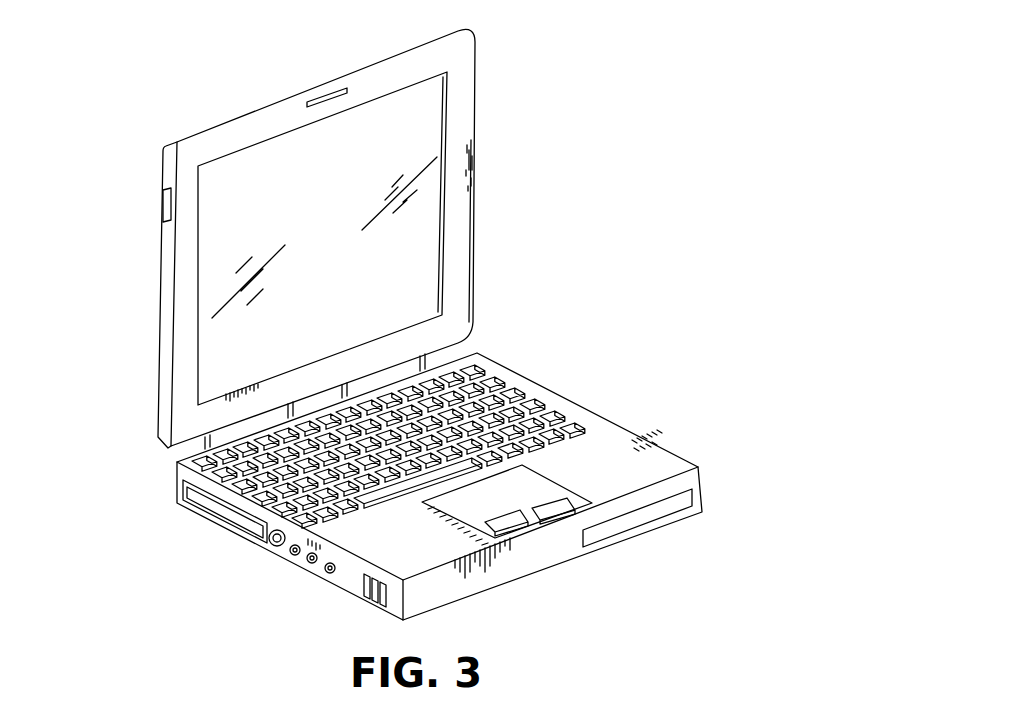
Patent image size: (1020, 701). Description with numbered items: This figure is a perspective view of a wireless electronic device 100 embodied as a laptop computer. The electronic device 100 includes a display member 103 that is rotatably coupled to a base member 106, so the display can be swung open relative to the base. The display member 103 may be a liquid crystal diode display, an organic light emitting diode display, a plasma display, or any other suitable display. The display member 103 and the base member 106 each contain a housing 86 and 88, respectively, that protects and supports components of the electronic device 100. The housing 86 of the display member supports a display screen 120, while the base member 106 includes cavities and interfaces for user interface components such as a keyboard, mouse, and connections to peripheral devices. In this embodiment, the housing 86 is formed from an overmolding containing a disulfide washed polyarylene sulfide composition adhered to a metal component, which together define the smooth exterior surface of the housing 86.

The wireless electronic device 100 is at (524, 44).
The housing 86 is at (480, 180).
The display member 103 is at (157, 298).
The display screen 120 is at (350, 275).
The housing 88 is at (600, 412).
The base member 106 is at (277, 568).